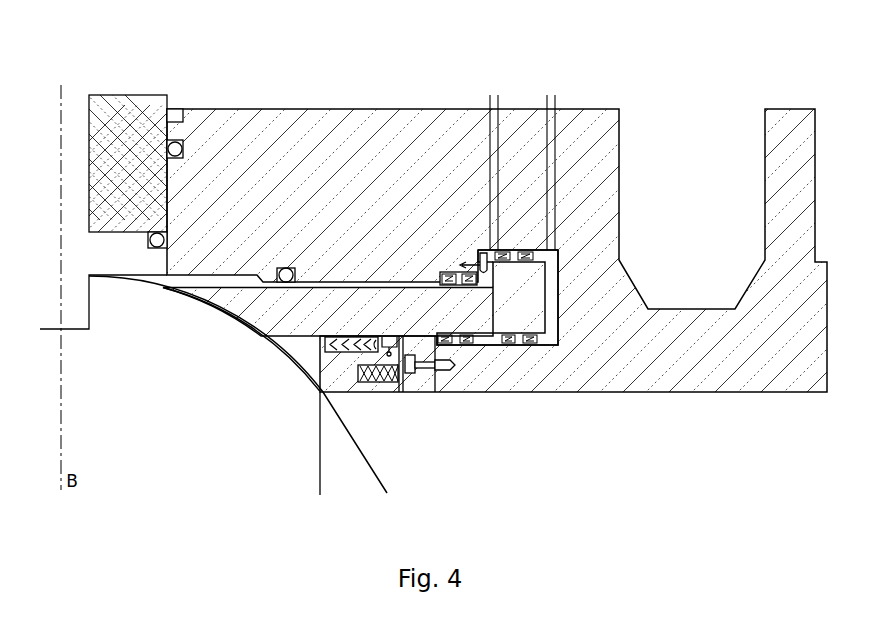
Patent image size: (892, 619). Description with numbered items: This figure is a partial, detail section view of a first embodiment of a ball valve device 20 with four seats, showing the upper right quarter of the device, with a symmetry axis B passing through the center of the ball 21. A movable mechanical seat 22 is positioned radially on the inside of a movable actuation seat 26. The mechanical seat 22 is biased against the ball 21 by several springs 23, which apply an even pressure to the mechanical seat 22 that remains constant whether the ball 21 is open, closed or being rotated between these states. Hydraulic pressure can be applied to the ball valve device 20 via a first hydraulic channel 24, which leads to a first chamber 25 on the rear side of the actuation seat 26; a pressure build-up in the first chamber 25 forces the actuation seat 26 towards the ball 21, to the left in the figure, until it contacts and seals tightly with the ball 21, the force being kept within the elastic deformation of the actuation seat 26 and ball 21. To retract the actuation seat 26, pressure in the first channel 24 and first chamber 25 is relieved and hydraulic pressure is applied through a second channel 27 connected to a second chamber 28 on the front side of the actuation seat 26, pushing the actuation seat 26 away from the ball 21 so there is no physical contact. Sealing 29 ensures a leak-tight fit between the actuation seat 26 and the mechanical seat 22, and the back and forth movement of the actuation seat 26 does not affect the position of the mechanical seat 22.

The ball valve device 20 is at (158, 75).
The ball 21 is at (352, 433).
The mechanical seat 22 is at (361, 392).
The springs 23 is at (382, 392).
The first hydraulic channel 24 is at (553, 95).
The first chamber 25 is at (553, 323).
The actuation seat 26 is at (418, 282).
The second channel 27 is at (496, 95).
The second chamber 28 is at (484, 250).
The sealing 29 is at (358, 337).